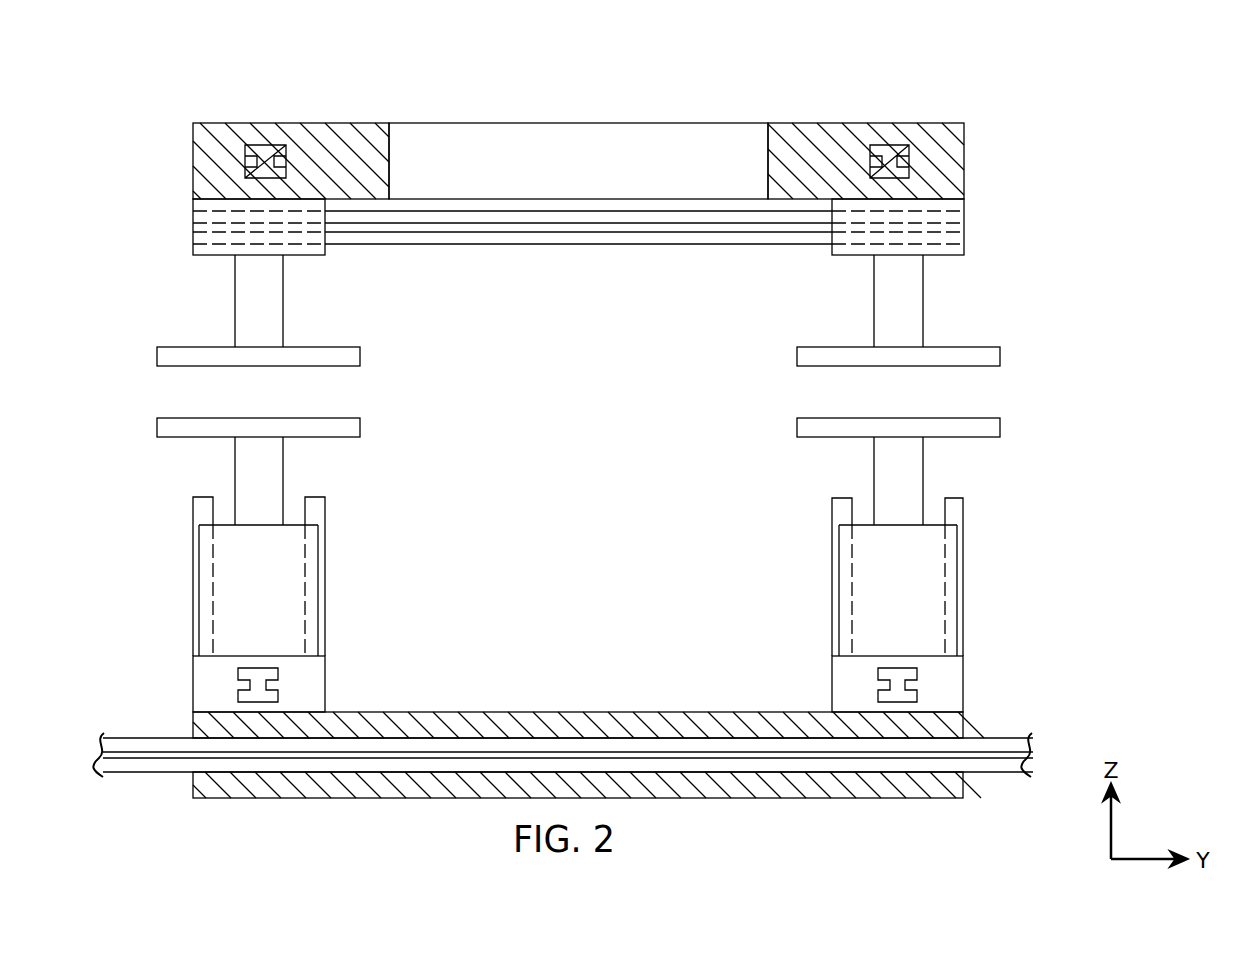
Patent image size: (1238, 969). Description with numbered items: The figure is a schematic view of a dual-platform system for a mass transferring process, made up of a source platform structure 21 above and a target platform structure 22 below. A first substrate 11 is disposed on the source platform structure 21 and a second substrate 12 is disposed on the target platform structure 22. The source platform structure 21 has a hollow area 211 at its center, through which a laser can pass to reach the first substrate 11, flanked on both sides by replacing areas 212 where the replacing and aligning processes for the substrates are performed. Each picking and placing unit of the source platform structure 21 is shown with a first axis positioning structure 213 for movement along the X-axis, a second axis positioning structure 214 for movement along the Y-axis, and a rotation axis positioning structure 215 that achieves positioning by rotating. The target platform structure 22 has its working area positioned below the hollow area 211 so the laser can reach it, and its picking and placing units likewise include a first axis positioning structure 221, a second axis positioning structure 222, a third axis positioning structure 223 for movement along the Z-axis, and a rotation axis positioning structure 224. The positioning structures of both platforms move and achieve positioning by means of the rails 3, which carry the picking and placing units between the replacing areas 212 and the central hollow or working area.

The source platform structure 21 is at (1113, 150).
The hollow area 211 is at (768, 113).
The replacing area 212 is at (389, 113).
The first axis positioning structure 213 is at (964, 157).
The second axis positioning structure 214 is at (964, 201).
The rotation axis positioning structure 215 is at (923, 301).
The first substrate 11 is at (1000, 355).
The second substrate 12 is at (1000, 423).
The target platform structure 22 is at (1156, 522).
The rotation axis positioning structure 224 is at (920, 472).
The third axis positioning structure 223 is at (915, 585).
The first axis positioning structure 221 is at (945, 670).
The second axis positioning structure 222 is at (958, 728).
The rails 3 is at (577, 243).